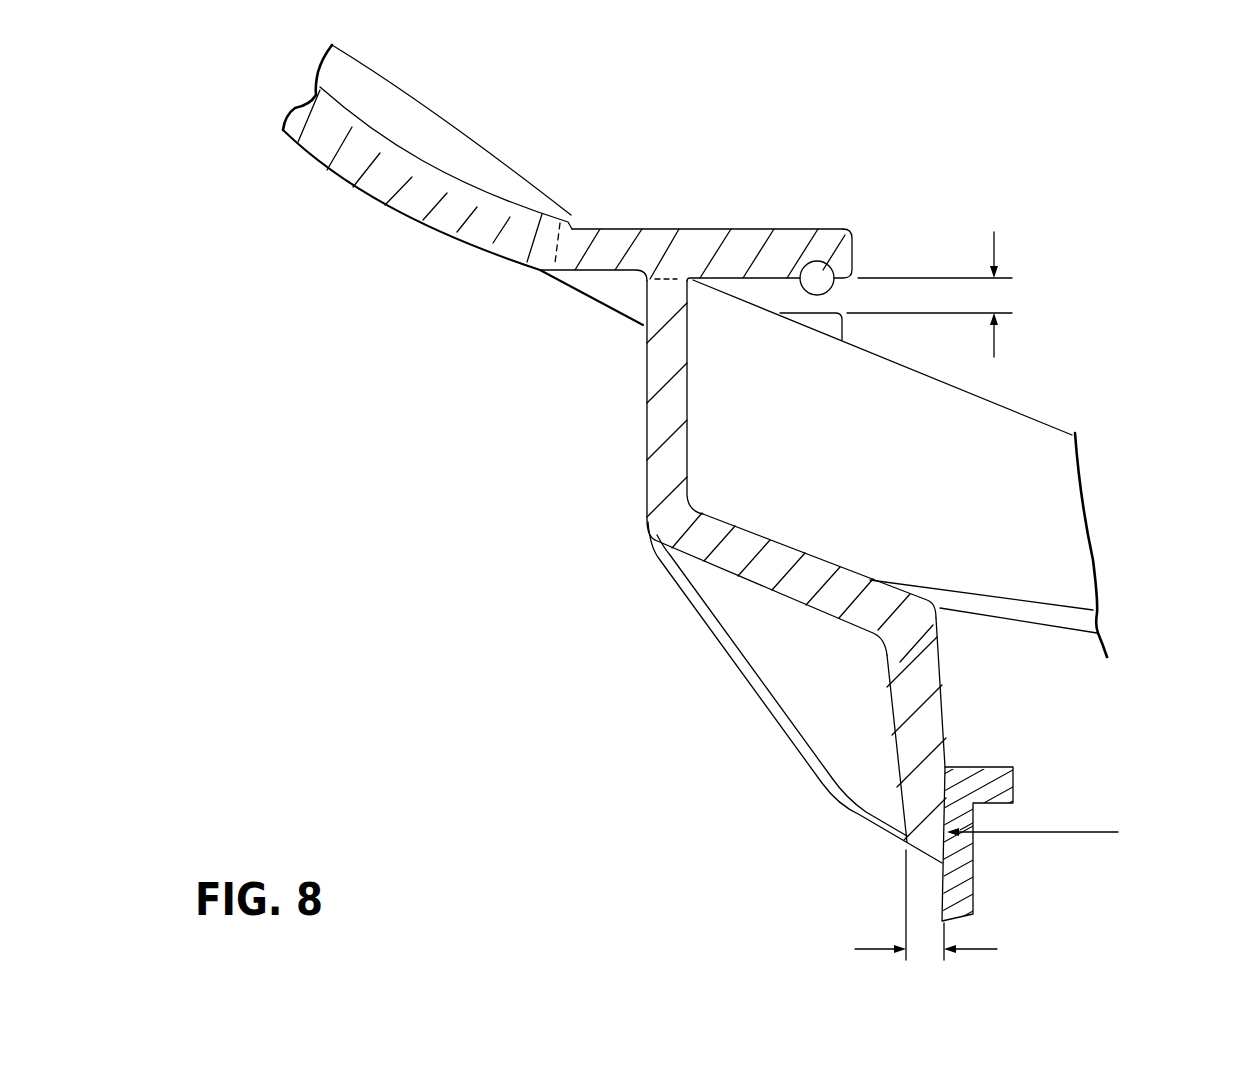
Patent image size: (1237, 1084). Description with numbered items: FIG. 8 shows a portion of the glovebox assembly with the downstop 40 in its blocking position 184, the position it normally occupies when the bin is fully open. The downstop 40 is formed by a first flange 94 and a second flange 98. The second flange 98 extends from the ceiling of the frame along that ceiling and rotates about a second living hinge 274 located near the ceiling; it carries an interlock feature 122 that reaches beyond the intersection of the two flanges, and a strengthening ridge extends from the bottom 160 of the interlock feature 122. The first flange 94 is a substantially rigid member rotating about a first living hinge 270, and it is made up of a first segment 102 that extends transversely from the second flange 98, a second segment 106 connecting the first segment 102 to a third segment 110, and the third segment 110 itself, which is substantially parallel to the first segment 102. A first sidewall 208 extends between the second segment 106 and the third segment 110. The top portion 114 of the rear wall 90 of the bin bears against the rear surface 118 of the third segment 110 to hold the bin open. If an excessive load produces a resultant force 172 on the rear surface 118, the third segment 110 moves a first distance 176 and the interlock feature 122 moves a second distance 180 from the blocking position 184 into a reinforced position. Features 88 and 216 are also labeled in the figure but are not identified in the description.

The downstop 40 is at (630, 390).
The sealing lip 88 is at (833, 325).
The rear wall 90 is at (960, 903).
The first flange 94 is at (783, 570).
The second flange 98 is at (700, 250).
The first segment 102 is at (667, 408).
The second segment 106 is at (850, 590).
The third segment 110 is at (943, 690).
The top portion 114 is at (955, 850).
The rear surface 118 is at (943, 727).
The interlock feature 122 is at (787, 243).
The bottom of the interlock feature 160 is at (832, 277).
The resultant force 172 is at (1070, 833).
The first distance 176 is at (873, 947).
The second distance 180 is at (997, 242).
The blocking position 184 is at (1112, 578).
The first sidewall 208 is at (675, 580).
The sealing strip 216 is at (750, 687).
The first living hinge 270 is at (657, 287).
The second living hinge 274 is at (573, 243).